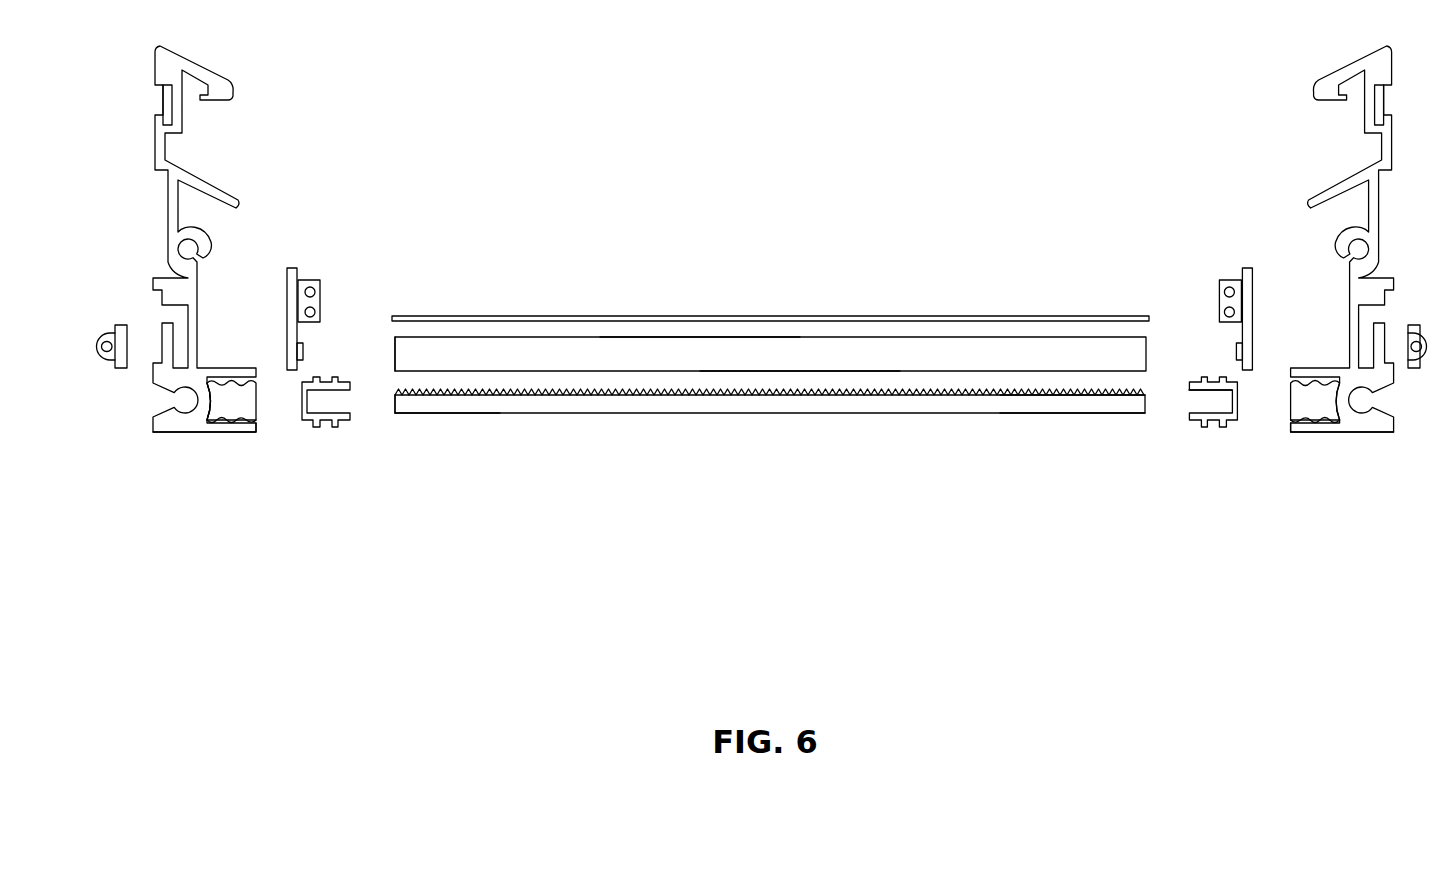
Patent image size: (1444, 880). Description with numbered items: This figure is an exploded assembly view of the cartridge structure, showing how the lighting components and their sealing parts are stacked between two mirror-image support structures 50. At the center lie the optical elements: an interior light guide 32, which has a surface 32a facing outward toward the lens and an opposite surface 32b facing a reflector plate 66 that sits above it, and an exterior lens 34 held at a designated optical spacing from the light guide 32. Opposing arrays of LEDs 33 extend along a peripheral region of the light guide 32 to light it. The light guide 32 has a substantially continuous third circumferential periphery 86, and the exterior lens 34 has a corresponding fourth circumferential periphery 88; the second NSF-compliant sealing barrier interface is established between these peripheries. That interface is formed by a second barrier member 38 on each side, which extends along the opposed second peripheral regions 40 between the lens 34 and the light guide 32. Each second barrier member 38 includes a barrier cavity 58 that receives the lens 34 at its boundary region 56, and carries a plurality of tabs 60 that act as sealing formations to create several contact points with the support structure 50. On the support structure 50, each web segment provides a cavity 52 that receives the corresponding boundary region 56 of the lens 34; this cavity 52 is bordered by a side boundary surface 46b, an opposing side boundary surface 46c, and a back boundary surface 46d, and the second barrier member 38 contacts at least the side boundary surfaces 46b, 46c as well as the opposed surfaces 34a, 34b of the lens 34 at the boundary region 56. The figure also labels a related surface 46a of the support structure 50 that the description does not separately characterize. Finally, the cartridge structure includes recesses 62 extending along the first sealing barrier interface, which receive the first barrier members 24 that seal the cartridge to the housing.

The recesses 62 is at (158, 350).
The first barrier members 24 is at (117, 375).
The gasket 46a is at (228, 363).
The back boundary surface 46d is at (222, 397).
The cavity 52 is at (233, 412).
The support structure 50 is at (210, 437).
The tabs 60 is at (325, 367).
The second barrier member 38 is at (325, 432).
The reflector plate 66 is at (672, 313).
The light guide 32 is at (623, 335).
The third circumferential periphery 86 is at (392, 366).
The surface of the light guide 32b is at (713, 337).
The surface of the light guide 32a is at (790, 370).
The exterior lens 34 is at (880, 418).
The opposed surface of the lens 34a is at (1145, 385).
The opposed surface of the lens 34b is at (1137, 418).
The fourth circumferential periphery 88 is at (387, 403).
The boundary region 56 is at (400, 415).
The arrays of LEDs 33 is at (1236, 355).
The barrier cavity 58 is at (1217, 402).
The second peripheral regions 40 is at (1312, 357).
The side boundary surface 46b is at (1316, 393).
The opposing side boundary surface 46c is at (1317, 408).